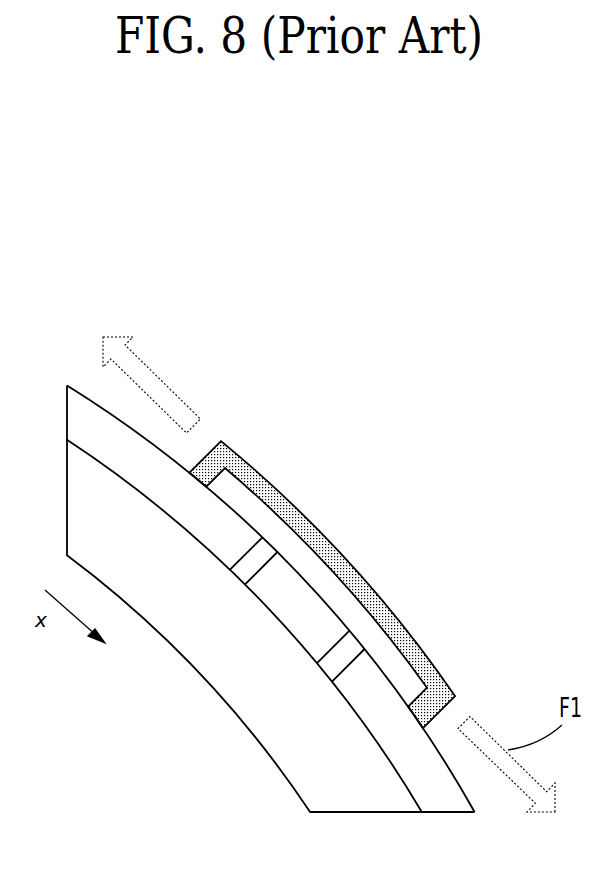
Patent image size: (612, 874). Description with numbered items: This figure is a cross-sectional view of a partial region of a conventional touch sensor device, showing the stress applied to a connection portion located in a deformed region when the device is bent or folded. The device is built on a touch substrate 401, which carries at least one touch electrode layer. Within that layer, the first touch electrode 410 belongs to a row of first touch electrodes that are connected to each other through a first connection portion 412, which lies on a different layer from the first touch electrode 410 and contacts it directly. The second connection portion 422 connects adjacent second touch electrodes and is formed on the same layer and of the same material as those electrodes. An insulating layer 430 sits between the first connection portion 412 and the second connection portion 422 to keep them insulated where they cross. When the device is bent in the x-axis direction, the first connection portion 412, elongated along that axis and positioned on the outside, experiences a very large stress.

The touch substrate 401 is at (273, 700).
The first touch electrode 410 is at (380, 723).
The first connection portion 412 is at (315, 527).
The second connection portion 422 is at (290, 602).
The insulating layer 430 is at (340, 588).